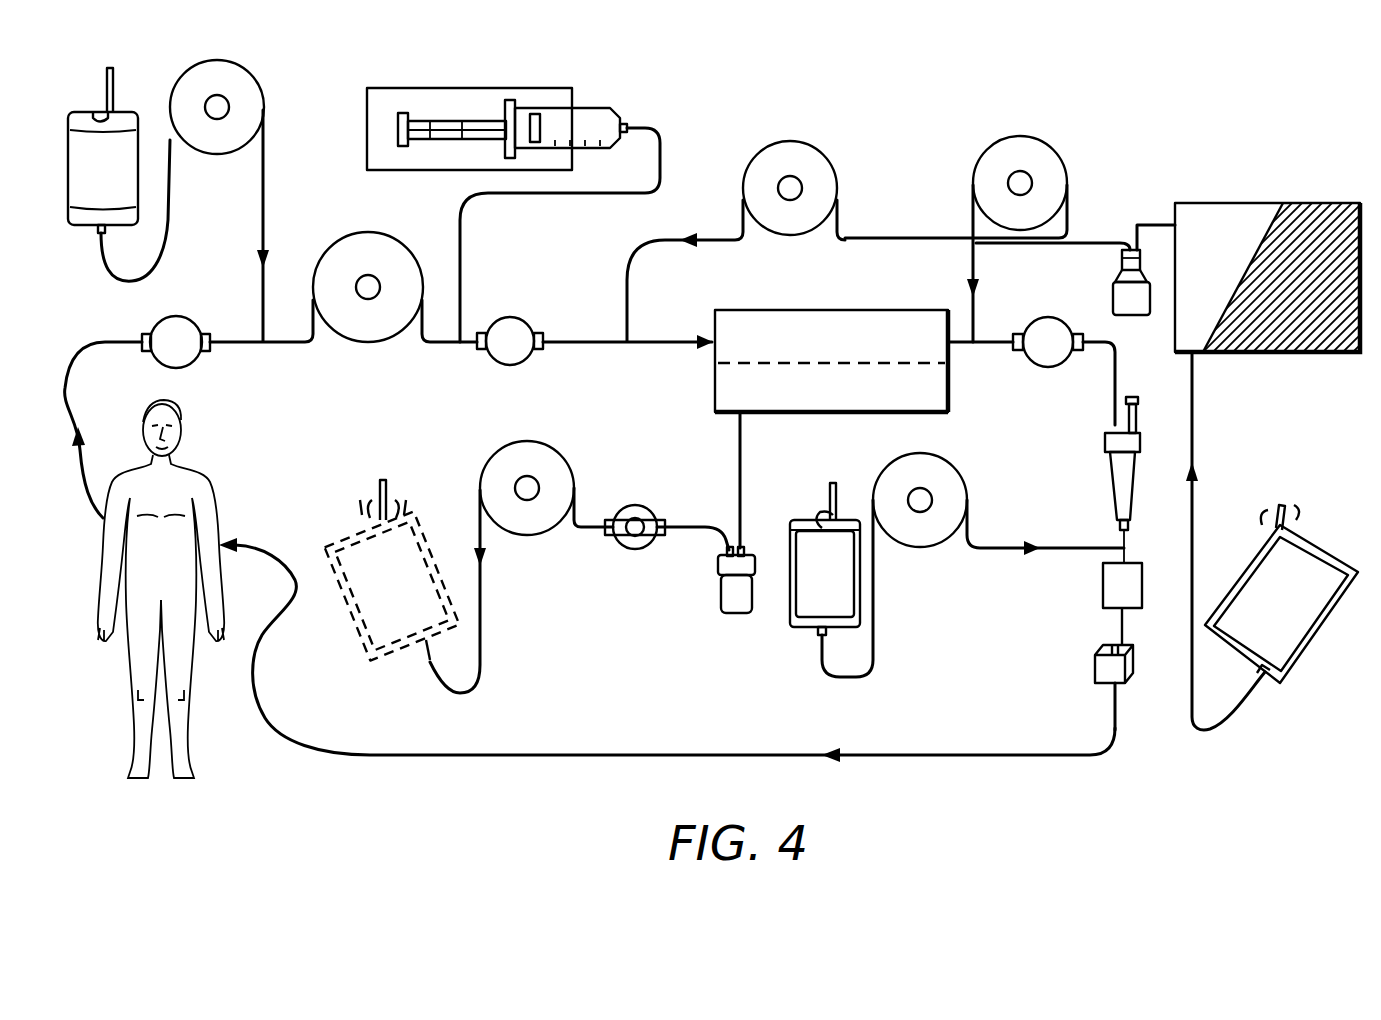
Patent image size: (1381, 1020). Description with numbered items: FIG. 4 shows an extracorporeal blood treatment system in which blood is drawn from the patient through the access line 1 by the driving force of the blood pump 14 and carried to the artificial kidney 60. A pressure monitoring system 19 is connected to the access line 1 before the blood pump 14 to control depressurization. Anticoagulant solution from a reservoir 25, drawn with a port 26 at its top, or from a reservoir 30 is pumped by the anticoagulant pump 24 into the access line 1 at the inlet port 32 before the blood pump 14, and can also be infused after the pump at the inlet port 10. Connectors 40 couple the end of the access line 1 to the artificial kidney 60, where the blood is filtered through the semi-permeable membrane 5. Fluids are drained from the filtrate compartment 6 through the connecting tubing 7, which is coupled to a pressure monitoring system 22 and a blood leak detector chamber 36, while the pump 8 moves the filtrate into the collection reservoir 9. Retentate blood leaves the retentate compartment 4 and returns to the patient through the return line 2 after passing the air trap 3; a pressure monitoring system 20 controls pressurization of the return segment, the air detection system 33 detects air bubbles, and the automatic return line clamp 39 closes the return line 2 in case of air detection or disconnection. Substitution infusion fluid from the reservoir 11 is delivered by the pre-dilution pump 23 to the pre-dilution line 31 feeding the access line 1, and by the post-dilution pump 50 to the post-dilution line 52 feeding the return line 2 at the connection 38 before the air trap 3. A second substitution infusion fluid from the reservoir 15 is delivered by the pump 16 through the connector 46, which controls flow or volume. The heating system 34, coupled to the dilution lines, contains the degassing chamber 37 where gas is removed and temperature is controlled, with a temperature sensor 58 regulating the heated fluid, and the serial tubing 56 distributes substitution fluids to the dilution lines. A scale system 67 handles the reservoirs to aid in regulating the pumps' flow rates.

The access line 1 is at (74, 352).
The return line 2 is at (272, 713).
The air trap 3 is at (1110, 475).
The retentate compartment 4 is at (825, 335).
The semi-permeable membrane 5 is at (745, 366).
The filtrate compartment 6 is at (822, 390).
The connecting tubing 7 is at (478, 612).
The pump 8 is at (512, 450).
The collection reservoir 9 is at (345, 548).
The inlet port 10 is at (462, 338).
The reservoir 11 is at (1342, 545).
The blood pump 14 is at (350, 238).
The reservoir 15 is at (800, 605).
The pump 16 is at (921, 537).
The pressure monitoring system 19 is at (177, 316).
The pressure monitoring system 20 is at (1045, 325).
The pressure monitoring system 22 is at (633, 549).
The pre-dilution pump 23 is at (795, 148).
The anticoagulant pump 24 is at (247, 92).
The anticoagulant reservoir 25 is at (73, 140).
The port 26 is at (118, 88).
The anticoagulant reservoir 30 is at (467, 93).
The pre-dilution line 31 is at (625, 318).
The inlet port 32 is at (270, 346).
The air detection system 33 is at (1108, 598).
The heating system 34 is at (1268, 205).
The blood leak detector chamber 36 is at (722, 590).
The degassing chamber 37 is at (1212, 220).
The connection 38 is at (975, 346).
The automatic return line clamp 39 is at (1097, 690).
The connector 40 is at (710, 333).
The connector 46 is at (1128, 552).
The post-dilution pump 50 is at (1028, 145).
The post-dilution line 52 is at (956, 230).
The serial tubing 56 is at (1160, 222).
The temperature sensor 58 is at (1115, 296).
The artificial kidney 60 is at (773, 306).
The scale system 67 is at (390, 481).